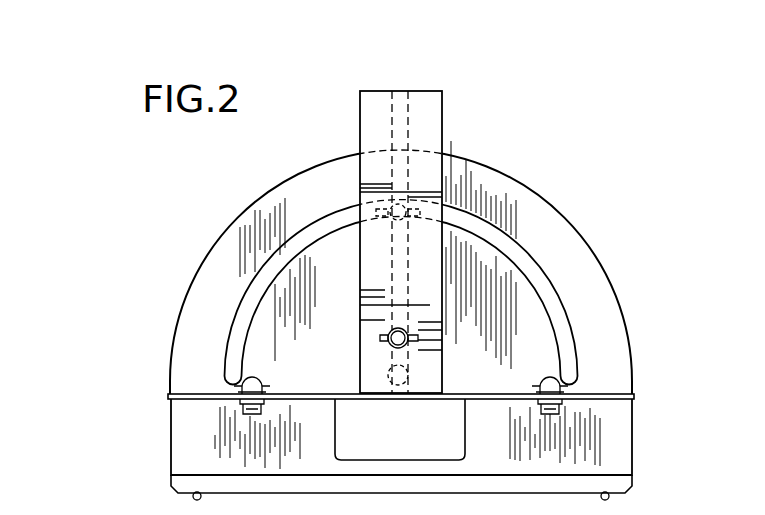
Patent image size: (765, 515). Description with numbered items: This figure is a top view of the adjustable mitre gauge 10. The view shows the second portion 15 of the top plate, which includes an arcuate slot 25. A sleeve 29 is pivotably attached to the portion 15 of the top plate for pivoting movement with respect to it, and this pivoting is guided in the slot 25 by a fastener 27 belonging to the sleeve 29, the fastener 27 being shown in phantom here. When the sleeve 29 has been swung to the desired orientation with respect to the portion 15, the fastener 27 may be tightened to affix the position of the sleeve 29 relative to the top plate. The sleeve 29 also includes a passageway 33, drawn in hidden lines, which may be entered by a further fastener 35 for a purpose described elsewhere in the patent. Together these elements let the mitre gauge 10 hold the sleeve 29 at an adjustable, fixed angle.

The adjustable mitre gauge 10 is at (146, 246).
The second portion 15 is at (358, 288).
The arcuate slot 25 is at (258, 284).
The fastener 27 is at (358, 197).
The sleeve 29 is at (380, 92).
The passageway 33 is at (412, 289).
The fastener 35 is at (392, 347).